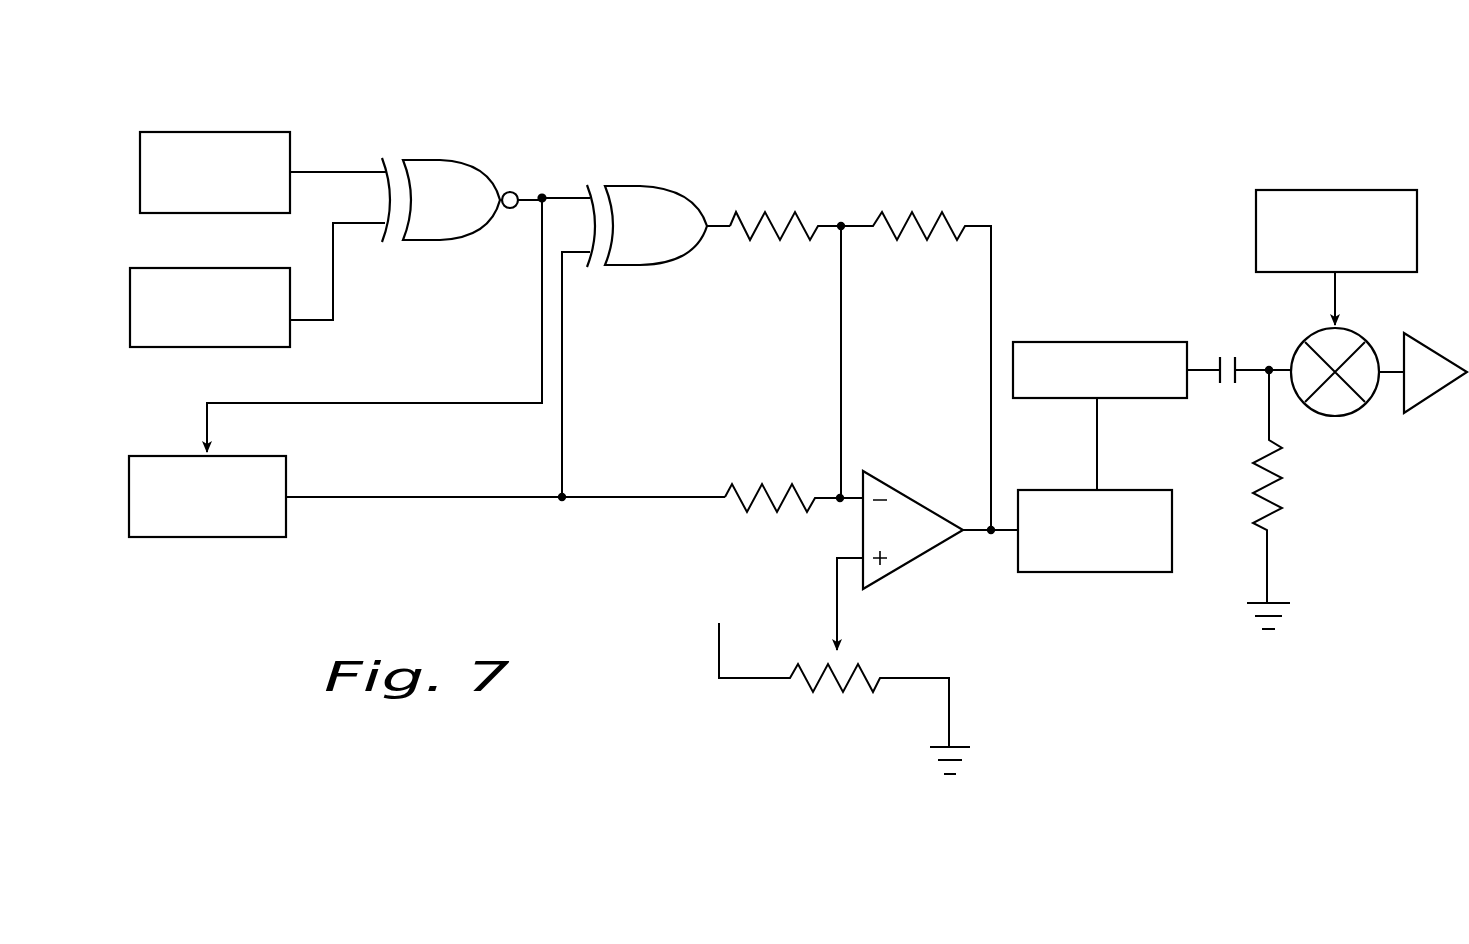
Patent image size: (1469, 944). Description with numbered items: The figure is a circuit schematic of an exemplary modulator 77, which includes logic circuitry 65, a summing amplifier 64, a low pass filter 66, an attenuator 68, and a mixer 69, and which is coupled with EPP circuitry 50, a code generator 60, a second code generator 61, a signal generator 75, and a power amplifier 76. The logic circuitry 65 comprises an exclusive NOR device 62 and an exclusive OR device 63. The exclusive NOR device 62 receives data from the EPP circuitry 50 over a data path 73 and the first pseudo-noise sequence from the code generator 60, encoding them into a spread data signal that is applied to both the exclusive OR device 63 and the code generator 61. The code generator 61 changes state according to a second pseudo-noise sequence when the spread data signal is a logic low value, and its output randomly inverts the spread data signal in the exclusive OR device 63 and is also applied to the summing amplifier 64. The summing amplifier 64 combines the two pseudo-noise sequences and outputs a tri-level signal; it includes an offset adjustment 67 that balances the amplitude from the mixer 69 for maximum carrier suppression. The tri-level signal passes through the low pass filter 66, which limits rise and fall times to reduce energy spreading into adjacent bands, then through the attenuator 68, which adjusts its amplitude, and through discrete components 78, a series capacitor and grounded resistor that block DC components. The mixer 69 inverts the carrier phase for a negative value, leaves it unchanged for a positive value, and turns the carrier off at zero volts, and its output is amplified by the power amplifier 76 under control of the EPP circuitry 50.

The EPP circuitry 50 is at (180, 130).
The data path 73 is at (345, 170).
The code generator 60 is at (291, 341).
The code generator 61 is at (220, 539).
The exclusive NOR device 62 is at (470, 163).
The exclusive OR device 63 is at (668, 265).
The summing amplifier 64 is at (725, 550).
The logic circuitry 65 is at (676, 91).
The low pass filter 66 is at (1122, 574).
The offset adjustment 67 is at (786, 722).
The attenuator 68 is at (1062, 341).
The mixer 69 is at (1322, 416).
The signal generator 75 is at (1418, 224).
The power amplifier 76 is at (1443, 394).
The modulator 77 is at (1190, 93).
The discrete components 78 is at (1214, 320).